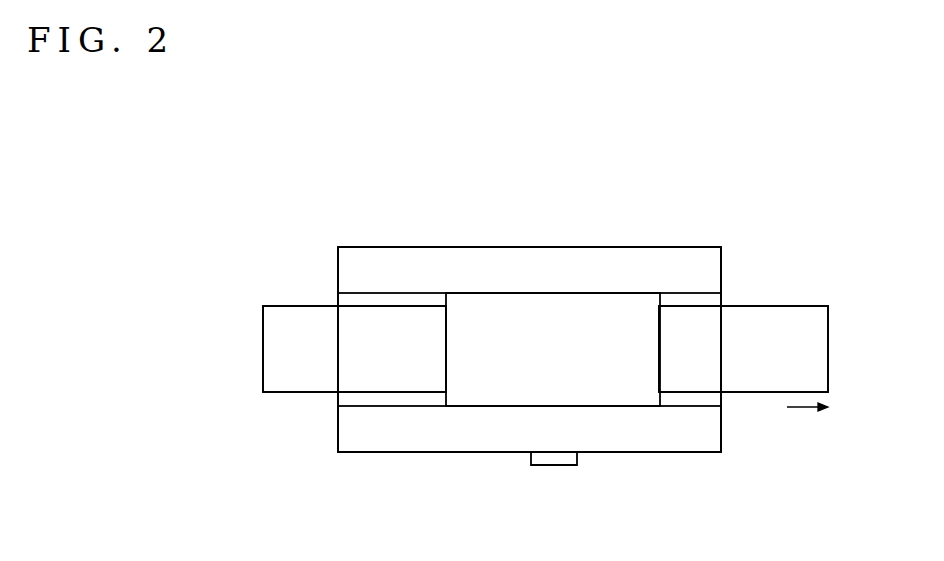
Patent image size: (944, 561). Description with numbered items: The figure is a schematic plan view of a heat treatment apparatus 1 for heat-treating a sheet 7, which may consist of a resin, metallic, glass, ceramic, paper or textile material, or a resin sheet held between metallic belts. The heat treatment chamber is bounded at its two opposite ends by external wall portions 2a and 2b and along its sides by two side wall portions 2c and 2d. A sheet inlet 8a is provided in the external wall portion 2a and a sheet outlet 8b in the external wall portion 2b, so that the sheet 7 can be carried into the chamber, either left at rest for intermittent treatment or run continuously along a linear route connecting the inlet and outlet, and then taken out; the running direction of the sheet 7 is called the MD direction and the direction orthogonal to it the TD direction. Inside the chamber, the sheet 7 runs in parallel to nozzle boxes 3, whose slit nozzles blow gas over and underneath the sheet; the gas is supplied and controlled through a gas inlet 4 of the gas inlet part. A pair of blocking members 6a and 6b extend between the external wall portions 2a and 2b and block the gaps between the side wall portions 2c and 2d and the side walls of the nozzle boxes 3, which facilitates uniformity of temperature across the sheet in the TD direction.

The heat treatment apparatus 1 is at (655, 230).
The external wall portion 2a is at (338, 270).
The external wall portion 2b is at (721, 275).
The side wall portion 2c is at (440, 247).
The side wall portion 2d is at (490, 452).
The nozzle box 3 is at (593, 308).
The gas inlet 4 is at (560, 418).
The blocking member 6a is at (513, 266).
The blocking member 6b is at (682, 442).
The sheet 7 is at (782, 380).
The sheet inlet 8a is at (337, 373).
The sheet outlet 8b is at (722, 377).